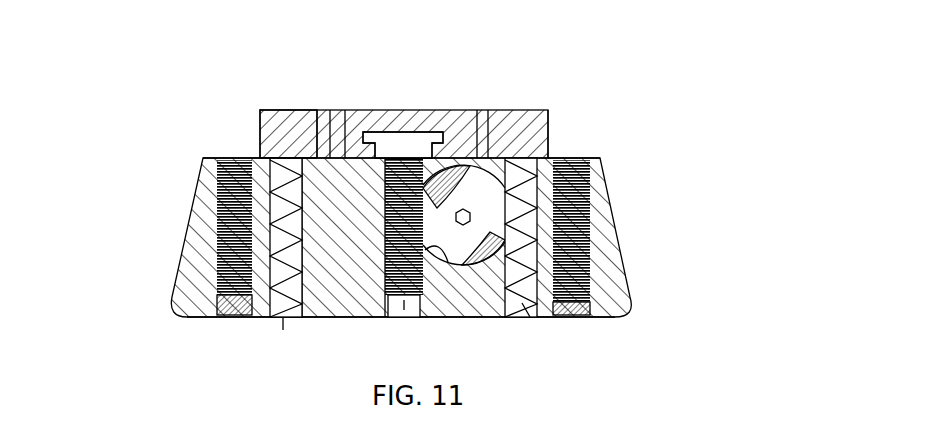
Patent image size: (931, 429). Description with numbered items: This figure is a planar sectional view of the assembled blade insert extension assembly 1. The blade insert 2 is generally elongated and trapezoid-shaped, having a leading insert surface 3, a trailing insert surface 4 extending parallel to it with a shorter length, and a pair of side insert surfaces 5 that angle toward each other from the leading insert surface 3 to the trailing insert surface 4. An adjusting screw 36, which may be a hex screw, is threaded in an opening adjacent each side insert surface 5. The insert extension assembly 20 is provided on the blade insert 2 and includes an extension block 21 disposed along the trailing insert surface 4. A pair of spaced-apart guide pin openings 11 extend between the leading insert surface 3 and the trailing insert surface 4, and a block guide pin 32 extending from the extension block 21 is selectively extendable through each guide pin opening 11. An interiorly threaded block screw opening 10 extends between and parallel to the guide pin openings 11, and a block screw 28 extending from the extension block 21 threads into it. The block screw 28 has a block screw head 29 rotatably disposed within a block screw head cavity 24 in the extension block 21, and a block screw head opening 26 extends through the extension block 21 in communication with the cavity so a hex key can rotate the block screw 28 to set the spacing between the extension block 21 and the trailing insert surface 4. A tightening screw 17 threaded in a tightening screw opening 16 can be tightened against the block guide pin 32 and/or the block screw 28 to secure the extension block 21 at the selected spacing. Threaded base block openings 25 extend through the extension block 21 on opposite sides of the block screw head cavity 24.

The blade insert extension assembly 1 is at (116, 62).
The blade insert 2 is at (178, 200).
The leading insert surface 3 is at (331, 318).
The trailing insert surface 4 is at (212, 157).
The side insert surfaces 5 is at (178, 240).
The block screw opening 10 is at (400, 318).
The guide pin openings 11 is at (288, 300).
The tightening screw opening 16 is at (445, 288).
The tightening screw 17 is at (550, 118).
The insert extension assembly 20 is at (250, 119).
The extension block 21 is at (288, 108).
The block screw head cavity 24 is at (396, 110).
The base block openings 25 is at (322, 110).
The block screw head opening 26 is at (402, 110).
The block screw 28 is at (344, 110).
The block screw head 29 is at (446, 110).
The block guide pin 32 is at (283, 318).
The adjusting screw 36 is at (240, 320).